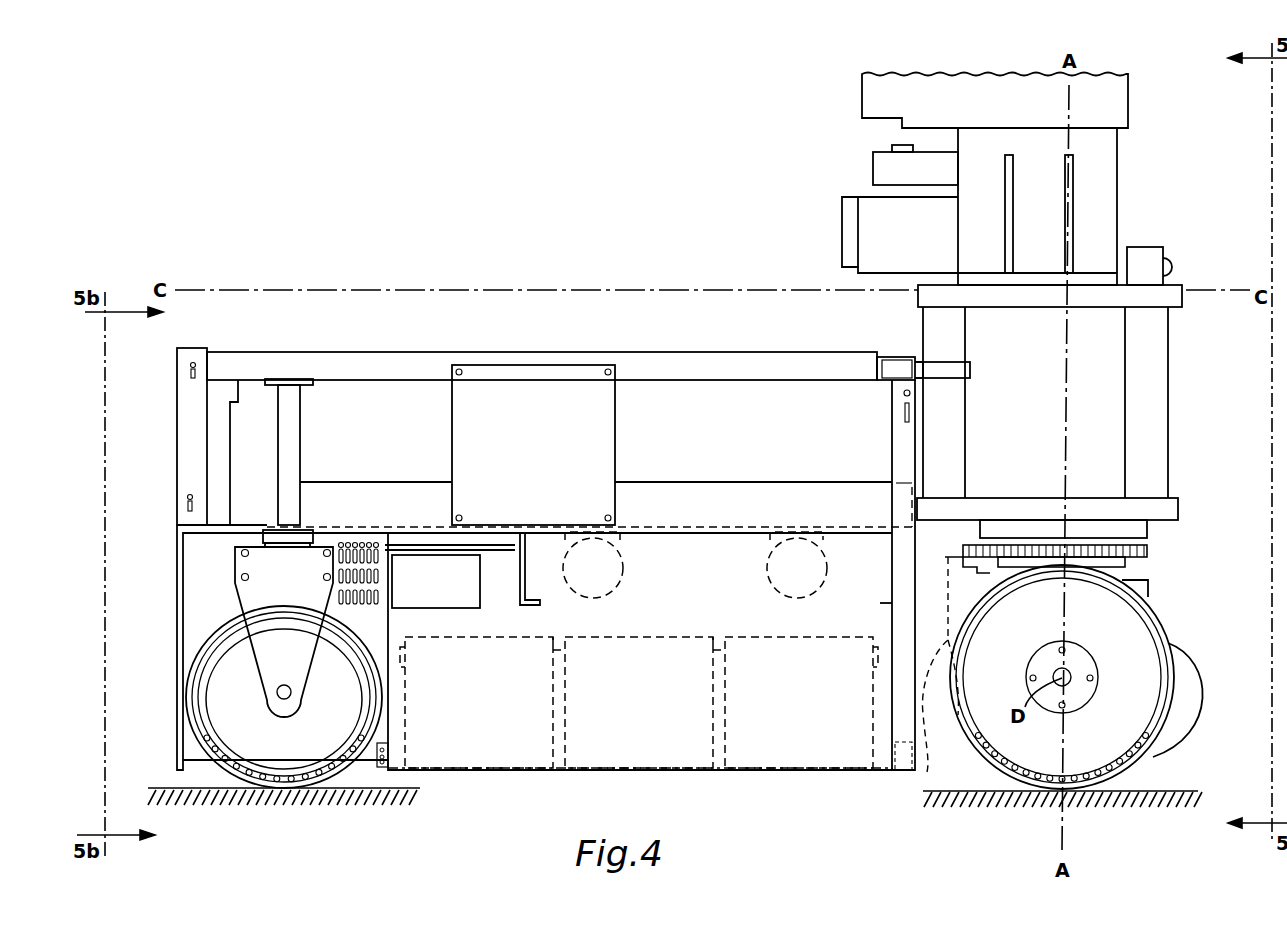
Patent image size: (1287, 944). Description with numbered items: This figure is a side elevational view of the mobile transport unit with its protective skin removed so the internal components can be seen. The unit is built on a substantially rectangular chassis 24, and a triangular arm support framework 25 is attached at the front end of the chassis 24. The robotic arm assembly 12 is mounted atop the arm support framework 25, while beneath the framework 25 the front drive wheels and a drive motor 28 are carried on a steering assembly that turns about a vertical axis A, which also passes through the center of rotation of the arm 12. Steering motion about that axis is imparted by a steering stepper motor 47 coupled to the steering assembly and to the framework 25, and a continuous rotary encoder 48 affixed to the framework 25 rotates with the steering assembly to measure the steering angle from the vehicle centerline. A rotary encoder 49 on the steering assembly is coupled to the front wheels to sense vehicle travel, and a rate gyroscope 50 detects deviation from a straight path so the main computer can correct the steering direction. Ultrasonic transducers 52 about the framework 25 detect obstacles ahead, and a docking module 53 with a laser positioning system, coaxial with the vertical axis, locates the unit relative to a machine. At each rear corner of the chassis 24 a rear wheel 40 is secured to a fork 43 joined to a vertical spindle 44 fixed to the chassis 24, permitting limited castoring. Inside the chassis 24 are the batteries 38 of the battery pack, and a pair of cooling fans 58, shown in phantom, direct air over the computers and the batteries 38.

The robotic arm assembly 12 is at (862, 101).
The chassis 24 is at (656, 352).
The arm support framework 25 is at (1182, 294).
The drive motor 28 is at (1178, 738).
The batteries 38 is at (806, 697).
The rear wheel 40 is at (294, 752).
The fork 43 is at (296, 612).
The vertical spindle 44 is at (300, 445).
The steering stepper motor 47 is at (1150, 530).
The continuous rotary encoder 48 is at (1150, 551).
The rotary encoder 49 is at (927, 772).
The gyroscope 50 is at (1148, 588).
The ultrasonic transducers 52 is at (1144, 247).
The docking module 53 is at (1138, 192).
The cooling fans 58 is at (809, 579).